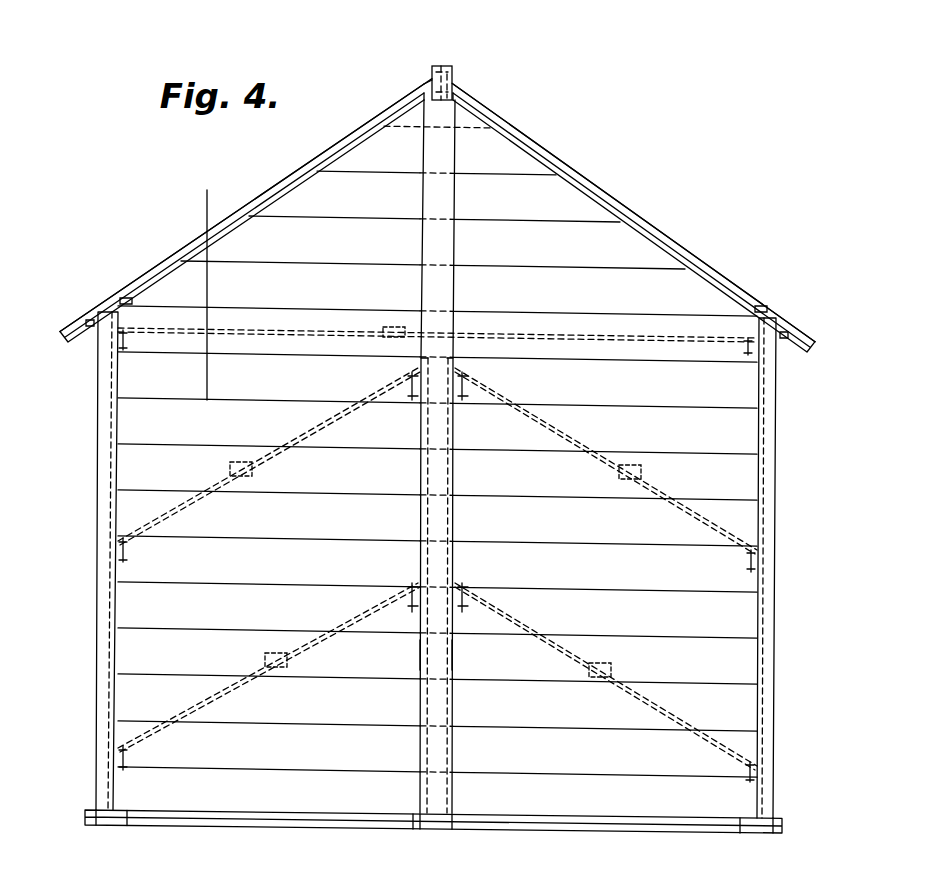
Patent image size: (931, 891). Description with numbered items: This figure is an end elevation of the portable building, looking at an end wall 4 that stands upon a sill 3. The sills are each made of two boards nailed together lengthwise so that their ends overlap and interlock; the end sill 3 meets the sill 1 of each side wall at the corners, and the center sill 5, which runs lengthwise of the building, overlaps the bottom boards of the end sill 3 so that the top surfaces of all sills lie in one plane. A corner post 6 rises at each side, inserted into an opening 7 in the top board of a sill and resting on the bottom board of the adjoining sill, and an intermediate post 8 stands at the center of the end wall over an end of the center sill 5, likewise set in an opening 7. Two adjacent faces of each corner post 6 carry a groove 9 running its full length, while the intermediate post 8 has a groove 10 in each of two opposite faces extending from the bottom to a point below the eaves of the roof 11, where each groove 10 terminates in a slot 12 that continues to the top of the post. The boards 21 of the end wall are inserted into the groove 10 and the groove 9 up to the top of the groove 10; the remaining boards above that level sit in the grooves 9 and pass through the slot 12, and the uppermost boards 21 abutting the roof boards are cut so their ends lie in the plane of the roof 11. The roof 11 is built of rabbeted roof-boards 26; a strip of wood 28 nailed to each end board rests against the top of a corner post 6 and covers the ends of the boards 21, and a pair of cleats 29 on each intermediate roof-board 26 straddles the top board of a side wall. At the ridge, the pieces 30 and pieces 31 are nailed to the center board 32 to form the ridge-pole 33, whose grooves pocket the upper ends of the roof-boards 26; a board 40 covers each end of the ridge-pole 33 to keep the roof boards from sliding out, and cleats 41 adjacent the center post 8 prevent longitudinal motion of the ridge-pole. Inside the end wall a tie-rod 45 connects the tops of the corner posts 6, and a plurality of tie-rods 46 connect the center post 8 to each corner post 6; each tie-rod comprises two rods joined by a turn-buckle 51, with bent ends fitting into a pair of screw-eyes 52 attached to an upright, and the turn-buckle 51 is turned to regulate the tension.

The sill 1 is at (95, 812).
The sill 3 is at (264, 826).
The end wall 4 is at (362, 469).
The center sill 5 is at (433, 826).
The corner post 6 is at (96, 692).
The opening 7 is at (737, 848).
The intermediate post 8 is at (455, 704).
The groove 9 is at (118, 603).
The groove 10 is at (420, 655).
The roof 11 is at (290, 175).
The slot 12 is at (442, 356).
The boards 21 is at (437, 451).
The roof-board 26 is at (333, 146).
The strip of wood 28 is at (302, 188).
The cleats 29 is at (133, 300).
The pieces 30 is at (452, 70).
The pieces 31 is at (453, 88).
The center board 32 is at (446, 67).
The ridge-pole 33 is at (439, 66).
The board 40 is at (430, 78).
The cleats 41 is at (424, 100).
The tie-rod 45 is at (590, 336).
The tie-rods 46 is at (337, 413).
The turn-buckle 51 is at (394, 327).
The screw-eyes 52 is at (130, 350).